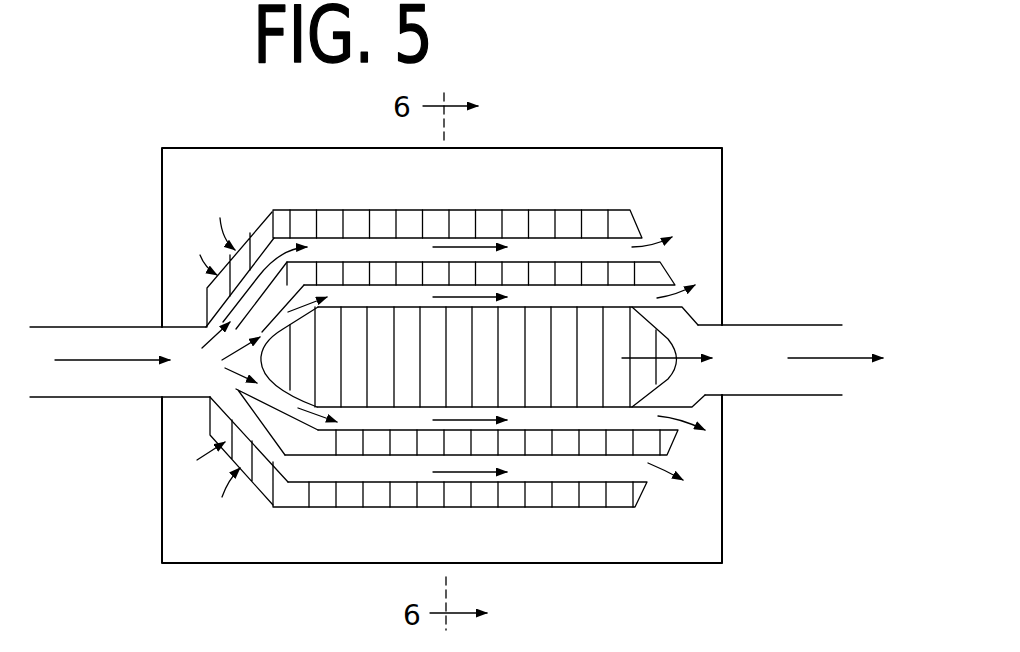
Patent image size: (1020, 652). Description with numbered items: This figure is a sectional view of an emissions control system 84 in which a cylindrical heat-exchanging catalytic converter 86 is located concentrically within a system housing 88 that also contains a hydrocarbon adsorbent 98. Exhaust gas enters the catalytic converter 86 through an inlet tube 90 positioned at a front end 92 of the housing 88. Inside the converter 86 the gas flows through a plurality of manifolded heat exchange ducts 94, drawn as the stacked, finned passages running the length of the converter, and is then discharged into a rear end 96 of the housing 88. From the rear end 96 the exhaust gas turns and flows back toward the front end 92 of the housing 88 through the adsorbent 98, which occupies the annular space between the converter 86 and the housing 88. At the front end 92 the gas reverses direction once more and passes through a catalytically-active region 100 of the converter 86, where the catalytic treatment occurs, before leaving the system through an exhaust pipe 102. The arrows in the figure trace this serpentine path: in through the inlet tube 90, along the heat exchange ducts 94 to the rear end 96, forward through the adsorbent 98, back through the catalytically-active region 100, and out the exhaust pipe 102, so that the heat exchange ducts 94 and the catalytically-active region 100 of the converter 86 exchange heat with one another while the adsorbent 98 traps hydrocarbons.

The emissions control system 84 is at (463, 302).
The catalytic converter 86 is at (467, 208).
The system housing 88 is at (623, 148).
The inlet tube 90 is at (96, 326).
The front end 92 is at (137, 412).
The heat exchange ducts 94 is at (665, 468).
The rear end 96 is at (725, 297).
The adsorbent 98 is at (705, 200).
The catalytically-active region 100 is at (327, 273).
The exhaust pipe 102 is at (813, 395).